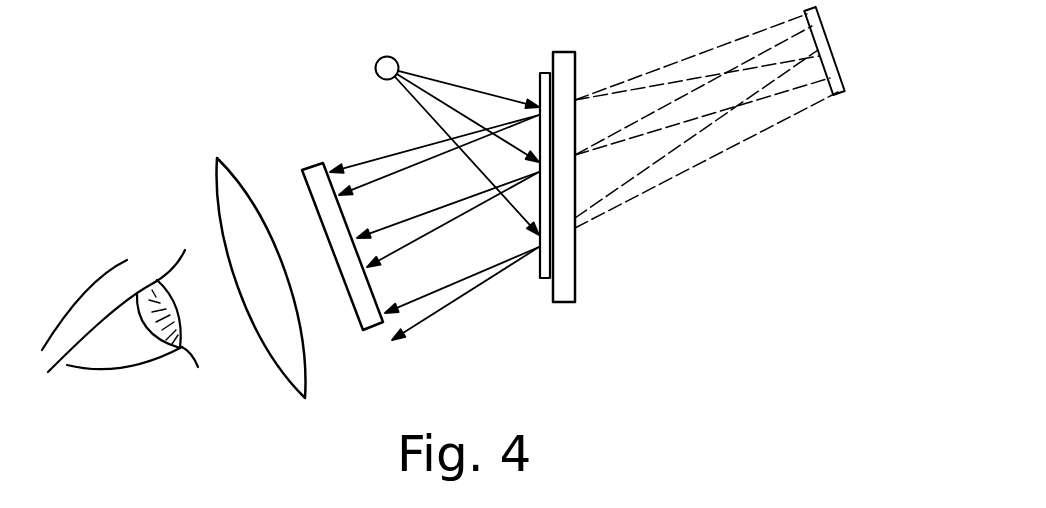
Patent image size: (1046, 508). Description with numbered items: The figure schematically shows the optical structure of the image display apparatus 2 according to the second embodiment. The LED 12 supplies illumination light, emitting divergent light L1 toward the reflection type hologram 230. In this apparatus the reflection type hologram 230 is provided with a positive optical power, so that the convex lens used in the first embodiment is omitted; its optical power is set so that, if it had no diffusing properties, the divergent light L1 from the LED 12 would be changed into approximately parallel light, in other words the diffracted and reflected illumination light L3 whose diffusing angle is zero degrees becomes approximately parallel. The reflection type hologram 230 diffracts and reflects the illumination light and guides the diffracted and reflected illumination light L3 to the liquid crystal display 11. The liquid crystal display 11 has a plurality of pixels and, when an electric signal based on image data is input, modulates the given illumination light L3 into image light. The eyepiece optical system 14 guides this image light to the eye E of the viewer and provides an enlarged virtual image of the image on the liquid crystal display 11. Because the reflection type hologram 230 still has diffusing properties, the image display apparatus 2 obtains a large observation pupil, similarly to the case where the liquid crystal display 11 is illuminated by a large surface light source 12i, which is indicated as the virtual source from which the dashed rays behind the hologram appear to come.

The eye E is at (110, 368).
The eyepiece optical system 14 is at (217, 158).
The liquid crystal display 11 is at (310, 165).
The LED 12 is at (384, 57).
The divergent light L1 is at (434, 191).
The diffracted and reflected illumination light L3 is at (462, 293).
The reflection type hologram 230 is at (543, 72).
The image display apparatus 2 is at (551, 347).
The large surface light source 12i is at (840, 96).